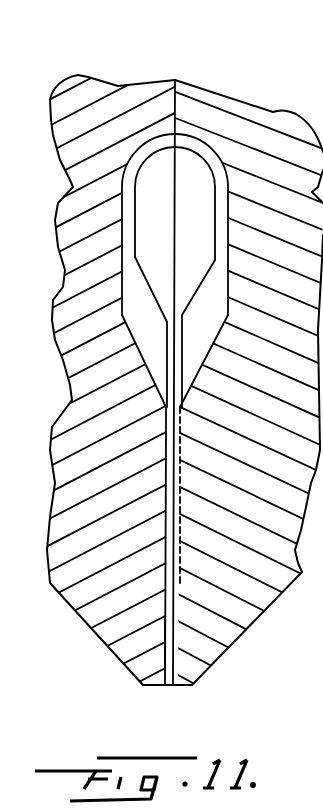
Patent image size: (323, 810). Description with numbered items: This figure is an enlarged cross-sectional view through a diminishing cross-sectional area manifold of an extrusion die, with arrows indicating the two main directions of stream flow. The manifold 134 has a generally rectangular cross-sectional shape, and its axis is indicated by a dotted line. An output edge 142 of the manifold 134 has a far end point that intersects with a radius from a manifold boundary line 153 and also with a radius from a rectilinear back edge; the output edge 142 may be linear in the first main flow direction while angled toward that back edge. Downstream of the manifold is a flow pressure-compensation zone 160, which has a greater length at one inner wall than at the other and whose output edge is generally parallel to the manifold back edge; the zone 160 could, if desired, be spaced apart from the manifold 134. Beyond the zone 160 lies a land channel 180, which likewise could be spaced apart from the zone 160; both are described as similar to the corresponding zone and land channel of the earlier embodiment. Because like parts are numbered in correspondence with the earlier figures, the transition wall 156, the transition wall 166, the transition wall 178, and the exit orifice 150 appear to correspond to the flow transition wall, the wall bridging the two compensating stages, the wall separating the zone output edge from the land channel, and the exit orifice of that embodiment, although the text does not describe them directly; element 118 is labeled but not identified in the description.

The probe tip body 118 is at (142, 76).
The manifold 134 is at (114, 210).
The manifold boundary line 153 is at (224, 293).
The output edge 142 is at (230, 315).
The tapered inner wall 156 is at (215, 346).
The junction 166 is at (166, 406).
The flow pressure-compensation zone 160 is at (185, 511).
The slot wall 178 is at (166, 600).
The land channel 180 is at (152, 643).
The center fiber 150 is at (170, 687).